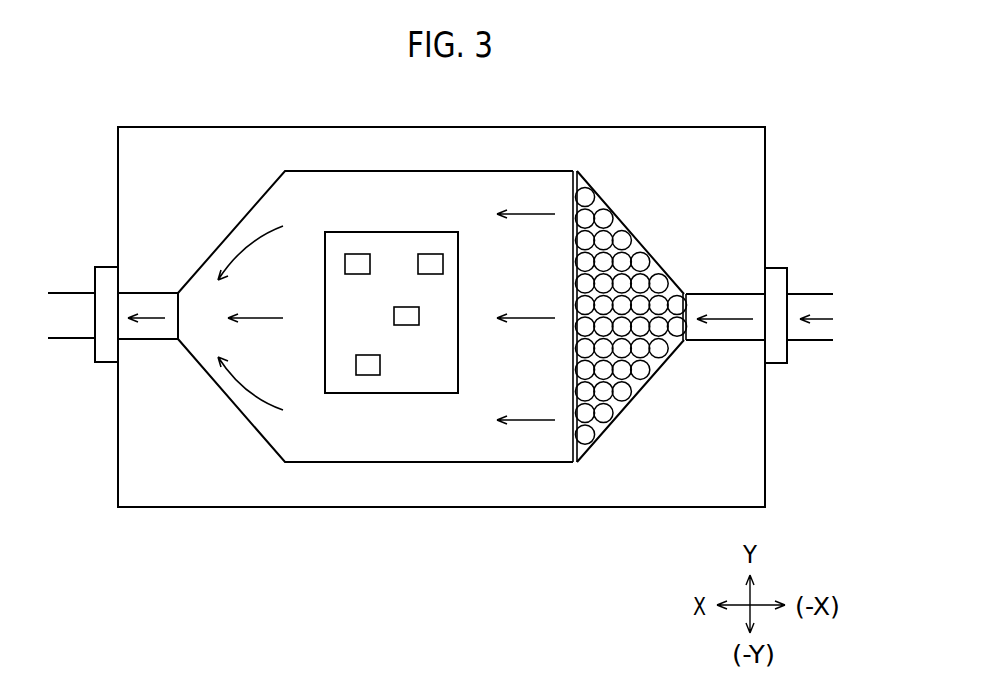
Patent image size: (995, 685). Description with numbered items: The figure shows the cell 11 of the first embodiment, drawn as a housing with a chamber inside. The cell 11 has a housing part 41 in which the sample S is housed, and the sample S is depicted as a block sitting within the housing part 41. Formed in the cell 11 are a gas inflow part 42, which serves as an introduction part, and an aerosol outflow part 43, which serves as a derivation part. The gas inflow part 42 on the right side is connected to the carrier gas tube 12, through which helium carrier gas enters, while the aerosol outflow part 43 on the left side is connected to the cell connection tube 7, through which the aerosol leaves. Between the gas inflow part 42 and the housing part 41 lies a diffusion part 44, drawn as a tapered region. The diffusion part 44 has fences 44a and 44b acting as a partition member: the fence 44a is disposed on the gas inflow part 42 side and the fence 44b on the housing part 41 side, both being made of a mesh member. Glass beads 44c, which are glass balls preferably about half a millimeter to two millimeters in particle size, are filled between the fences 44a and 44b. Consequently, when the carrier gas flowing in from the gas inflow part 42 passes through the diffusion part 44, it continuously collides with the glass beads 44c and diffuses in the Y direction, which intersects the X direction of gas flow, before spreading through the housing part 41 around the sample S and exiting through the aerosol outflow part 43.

The cell 11 is at (704, 126).
The housing part 41 is at (385, 178).
The aerosol outflow part 43 is at (155, 341).
The cell connection tube 7 is at (72, 340).
The gas inflow part 42 is at (717, 342).
The carrier gas tube 12 is at (820, 342).
The diffusion part 44 is at (659, 184).
The fence 44a is at (688, 297).
The fence 44b is at (572, 256).
The glass beads 44c is at (639, 260).
The sample S is at (407, 236).